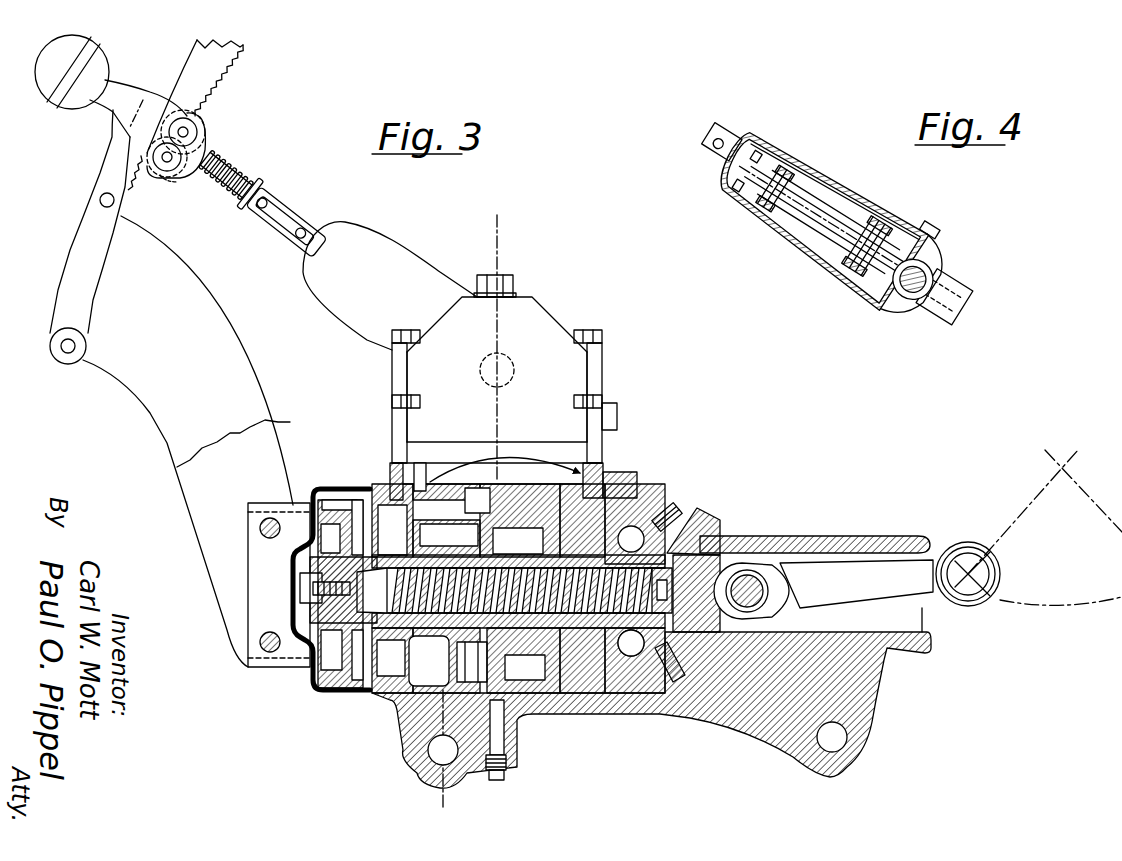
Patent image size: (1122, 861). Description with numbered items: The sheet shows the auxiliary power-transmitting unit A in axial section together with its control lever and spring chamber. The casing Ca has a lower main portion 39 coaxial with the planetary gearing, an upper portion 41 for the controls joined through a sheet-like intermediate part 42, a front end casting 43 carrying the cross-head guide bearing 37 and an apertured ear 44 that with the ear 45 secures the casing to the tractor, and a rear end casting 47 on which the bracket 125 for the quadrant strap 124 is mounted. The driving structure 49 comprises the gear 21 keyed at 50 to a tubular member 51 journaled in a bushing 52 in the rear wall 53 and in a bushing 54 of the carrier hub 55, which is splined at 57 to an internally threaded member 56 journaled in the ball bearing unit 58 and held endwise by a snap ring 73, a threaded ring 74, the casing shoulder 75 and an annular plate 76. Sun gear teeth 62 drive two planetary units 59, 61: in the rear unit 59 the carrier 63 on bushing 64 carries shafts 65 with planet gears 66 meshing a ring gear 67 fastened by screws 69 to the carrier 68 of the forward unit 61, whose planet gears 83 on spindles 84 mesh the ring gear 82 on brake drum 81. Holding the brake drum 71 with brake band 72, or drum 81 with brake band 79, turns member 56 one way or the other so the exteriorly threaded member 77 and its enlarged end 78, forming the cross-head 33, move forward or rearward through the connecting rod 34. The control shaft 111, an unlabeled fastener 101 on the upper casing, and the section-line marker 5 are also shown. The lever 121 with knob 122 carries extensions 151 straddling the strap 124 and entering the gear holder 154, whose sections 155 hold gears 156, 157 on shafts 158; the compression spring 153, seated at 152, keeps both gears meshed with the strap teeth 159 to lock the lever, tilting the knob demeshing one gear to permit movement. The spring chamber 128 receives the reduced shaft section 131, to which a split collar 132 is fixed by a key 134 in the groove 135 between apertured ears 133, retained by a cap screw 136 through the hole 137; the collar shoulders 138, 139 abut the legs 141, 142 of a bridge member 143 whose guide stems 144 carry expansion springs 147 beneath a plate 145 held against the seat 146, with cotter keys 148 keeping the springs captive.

In FIG. 3, the knob 122 is at (64, 65).
In FIG. 3, the quadrant strap 124 is at (108, 160).
In FIG. 3, the gear holder 154 is at (136, 105).
In FIG. 3, the opposed sections 155 is at (188, 128).
In FIG. 3, the gear 156 is at (178, 183).
In FIG. 3, the gear 157 is at (206, 132).
In FIG. 3, the shafts 158 is at (187, 131).
In FIG. 3, the teeth 159 is at (233, 64).
In FIG. 3, the strap-like extension members 151 is at (263, 194).
In FIG. 3, the seat 152 is at (247, 202).
In FIG. 3, the compression spring 153 is at (232, 172).
In FIG. 3, the bracket 125 is at (193, 371).
In FIG. 3, the control lever 121 is at (354, 222).
In FIG. 4, the control lever 121 is at (752, 130).
In FIG. 3, the control shaft 111 is at (512, 362).
In FIG. 3, the upper portion of casing 41 is at (606, 373).
In FIG. 3, the nut 101 is at (391, 402).
In FIG. 3, the intermediate sheet-like casing portion 42 is at (604, 467).
In FIG. 3, the section line 5 is at (497, 219).
In FIG. 3, the planet gear carrier 63 is at (412, 522).
In FIG. 3, the brake band 72 is at (448, 480).
In FIG. 3, the bushing 64 is at (446, 538).
In FIG. 3, the planet gear shafts 65 is at (463, 536).
In FIG. 3, the machine screws 69 is at (508, 488).
In FIG. 3, the carrier 68 is at (518, 541).
In FIG. 3, the sun gear teeth 62 is at (526, 543).
In FIG. 3, the forward planetary gear unit 61 is at (504, 484).
In FIG. 3, the ring gear 82 is at (523, 475).
In FIG. 3, the brake drum 81 is at (541, 488).
In FIG. 3, the brake band 79 is at (552, 484).
In FIG. 3, the rear planetary gear unit 59 is at (464, 470).
In FIG. 3, the planet gears 66 is at (526, 590).
In FIG. 3, the bushing 54 is at (545, 593).
In FIG. 3, the planetary gear carrier hub 55 is at (585, 593).
In FIG. 3, the snap ring 73 is at (614, 593).
In FIG. 3, the splined connection 57 is at (653, 590).
In FIG. 3, the exteriorly threaded driven member 77 is at (396, 592).
In FIG. 3, the rear wall of casing 53 is at (352, 500).
In FIG. 3, the key 50 is at (335, 560).
In FIG. 3, the gear 21 is at (330, 500).
In FIG. 3, the lower main portion of casing 39 is at (367, 478).
In FIG. 3, the end casting 47 is at (322, 698).
In FIG. 3, the driving structure 49 is at (308, 614).
In FIG. 3, the bushing 52 is at (392, 660).
In FIG. 3, the tubular member 51 is at (444, 660).
In FIG. 3, the ring gear 67 is at (462, 662).
In FIG. 3, the planetary gears 83 is at (532, 710).
In FIG. 3, the spindles 84 is at (561, 706).
In FIG. 3, the front end casting 43 is at (730, 712).
In FIG. 3, the apertured ear 44 is at (912, 758).
In FIG. 3, the apertured ear 45 is at (402, 756).
In FIG. 3, the brake drum 71 is at (398, 710).
In FIG. 3, the enlarged front end portion 78 is at (707, 636).
In FIG. 3, the casing shoulder 75 is at (663, 684).
In FIG. 3, the internally threaded ring 74 is at (692, 528).
In FIG. 3, the internally threaded member 56 is at (674, 584).
In FIG. 3, the ball bearing unit 58 is at (655, 505).
In FIG. 3, the annular plate 76 is at (641, 487).
In FIG. 3, the casing Ca is at (668, 486).
In FIG. 3, the unit A is at (708, 532).
In FIG. 3, the cross-head guide bearing 37 is at (826, 537).
In FIG. 3, the connecting rod 34 is at (869, 562).
In FIG. 3, the cross-head 33 is at (775, 538).
In FIG. 4, the spring chamber 128 is at (880, 218).
In FIG. 4, the spring guide stems 144 is at (845, 200).
In FIG. 4, the expansion springs 147 is at (815, 175).
In FIG. 4, the cotter keys 148 is at (768, 176).
In FIG. 4, the plate 145 is at (755, 210).
In FIG. 4, the seat 146 is at (800, 150).
In FIG. 4, the split ring 132 is at (930, 248).
In FIG. 4, the reduced end section 131 is at (940, 325).
In FIG. 4, the shoulder 139 is at (942, 262).
In FIG. 4, the apertured ears 133 is at (950, 290).
In FIG. 4, the leg 142 is at (923, 232).
In FIG. 4, the cap screw 136 is at (955, 278).
In FIG. 4, the axial groove 135 is at (940, 282).
In FIG. 4, the hole 137 is at (955, 300).
In FIG. 4, the key member 134 is at (950, 310).
In FIG. 4, the bridge member 143 is at (880, 300).
In FIG. 4, the leg 141 is at (893, 312).
In FIG. 4, the shoulder 138 is at (912, 315).